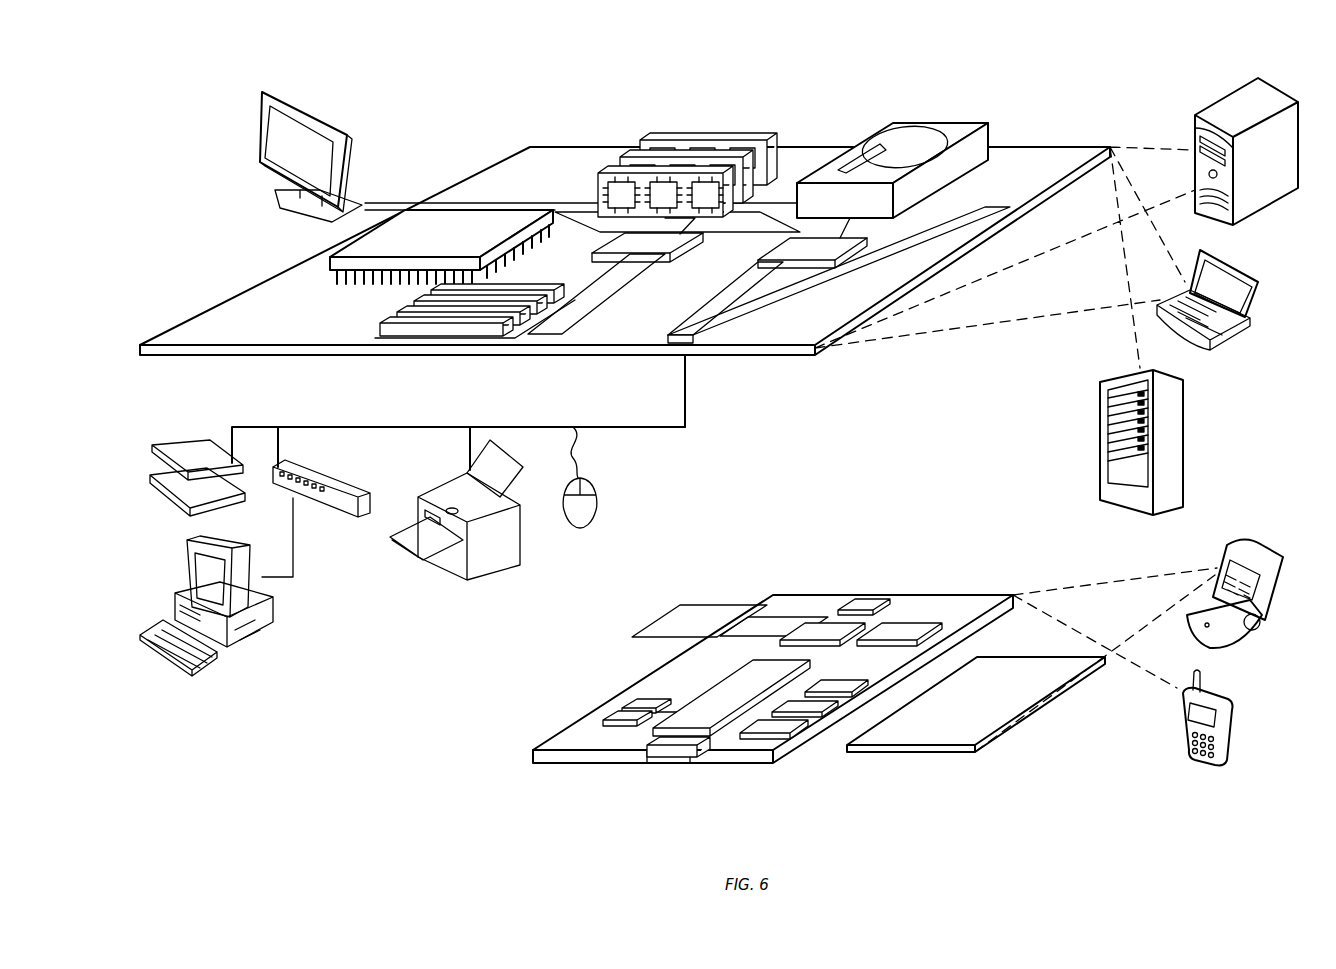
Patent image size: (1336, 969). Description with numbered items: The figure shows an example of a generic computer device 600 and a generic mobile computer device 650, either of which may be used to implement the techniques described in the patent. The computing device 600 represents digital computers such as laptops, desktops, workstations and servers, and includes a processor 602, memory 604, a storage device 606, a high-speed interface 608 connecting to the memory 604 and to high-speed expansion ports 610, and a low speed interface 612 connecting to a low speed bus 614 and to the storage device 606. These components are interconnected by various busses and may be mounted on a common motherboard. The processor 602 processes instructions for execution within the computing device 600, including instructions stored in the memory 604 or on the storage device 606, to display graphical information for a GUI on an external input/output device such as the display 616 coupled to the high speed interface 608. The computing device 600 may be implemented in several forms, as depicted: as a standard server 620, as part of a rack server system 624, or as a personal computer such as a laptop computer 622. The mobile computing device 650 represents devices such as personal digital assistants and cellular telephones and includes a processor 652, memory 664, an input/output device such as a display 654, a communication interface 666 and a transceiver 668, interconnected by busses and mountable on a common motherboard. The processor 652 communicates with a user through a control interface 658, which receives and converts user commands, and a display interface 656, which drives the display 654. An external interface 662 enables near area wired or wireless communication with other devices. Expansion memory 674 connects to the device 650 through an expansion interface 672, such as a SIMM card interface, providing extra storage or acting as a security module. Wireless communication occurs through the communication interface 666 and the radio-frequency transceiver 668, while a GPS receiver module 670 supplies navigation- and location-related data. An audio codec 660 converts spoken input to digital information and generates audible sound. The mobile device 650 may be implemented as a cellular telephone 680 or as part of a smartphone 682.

The computing device 600 is at (455, 118).
The processor 602 is at (330, 260).
The memory 604 is at (660, 137).
The storage device 606 is at (880, 123).
The high-speed interface 608 is at (620, 246).
The high-speed expansion ports 610 is at (397, 318).
The low speed interface 612 is at (793, 242).
The low speed bus 614 is at (700, 350).
The display 616 is at (262, 92).
The standard server 620 is at (1195, 130).
The laptop computer 622 is at (1257, 272).
The rack server system 624 is at (1102, 465).
The mobile computing device 650 is at (510, 765).
The processor 652 is at (708, 722).
The display 654 is at (938, 737).
The display interface 656 is at (773, 727).
The control interface 658 is at (807, 707).
The audio codec 660 is at (832, 687).
The external interface 662 is at (673, 752).
The memory 664 is at (620, 710).
The communication interface 666 is at (822, 628).
The transceiver 668 is at (900, 628).
The GPS receiver module 670 is at (873, 594).
The expansion interface 672 is at (752, 605).
The expansion memory 674 is at (678, 605).
The cellular telephone 680 is at (1236, 547).
The smartphone 682 is at (1180, 710).